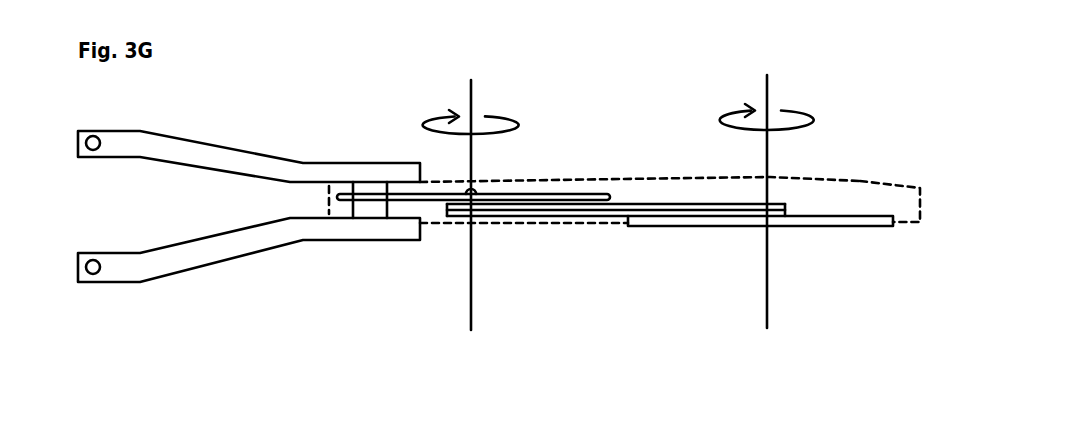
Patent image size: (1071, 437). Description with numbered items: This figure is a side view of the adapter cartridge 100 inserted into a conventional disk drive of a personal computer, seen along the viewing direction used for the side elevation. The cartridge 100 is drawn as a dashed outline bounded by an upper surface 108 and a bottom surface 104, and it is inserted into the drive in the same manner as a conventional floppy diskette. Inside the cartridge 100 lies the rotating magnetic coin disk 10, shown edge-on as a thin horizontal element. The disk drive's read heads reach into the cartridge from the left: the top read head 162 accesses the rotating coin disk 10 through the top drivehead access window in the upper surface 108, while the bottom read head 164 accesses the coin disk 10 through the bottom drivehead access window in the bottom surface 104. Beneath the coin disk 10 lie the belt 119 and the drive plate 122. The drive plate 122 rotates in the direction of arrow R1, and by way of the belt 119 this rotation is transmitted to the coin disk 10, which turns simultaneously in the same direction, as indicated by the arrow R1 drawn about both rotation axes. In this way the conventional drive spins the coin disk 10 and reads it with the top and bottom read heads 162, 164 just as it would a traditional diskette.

The coin disk 10 is at (560, 193).
The adapter cartridge 100 is at (863, 178).
The bottom surface 104 is at (600, 224).
The upper surface 108 is at (905, 185).
The belt 119 is at (571, 212).
The drive plate 122 is at (690, 227).
The top read head 162 is at (215, 143).
The bottom read head 164 is at (217, 262).
The arrow R1 is at (618, 202).